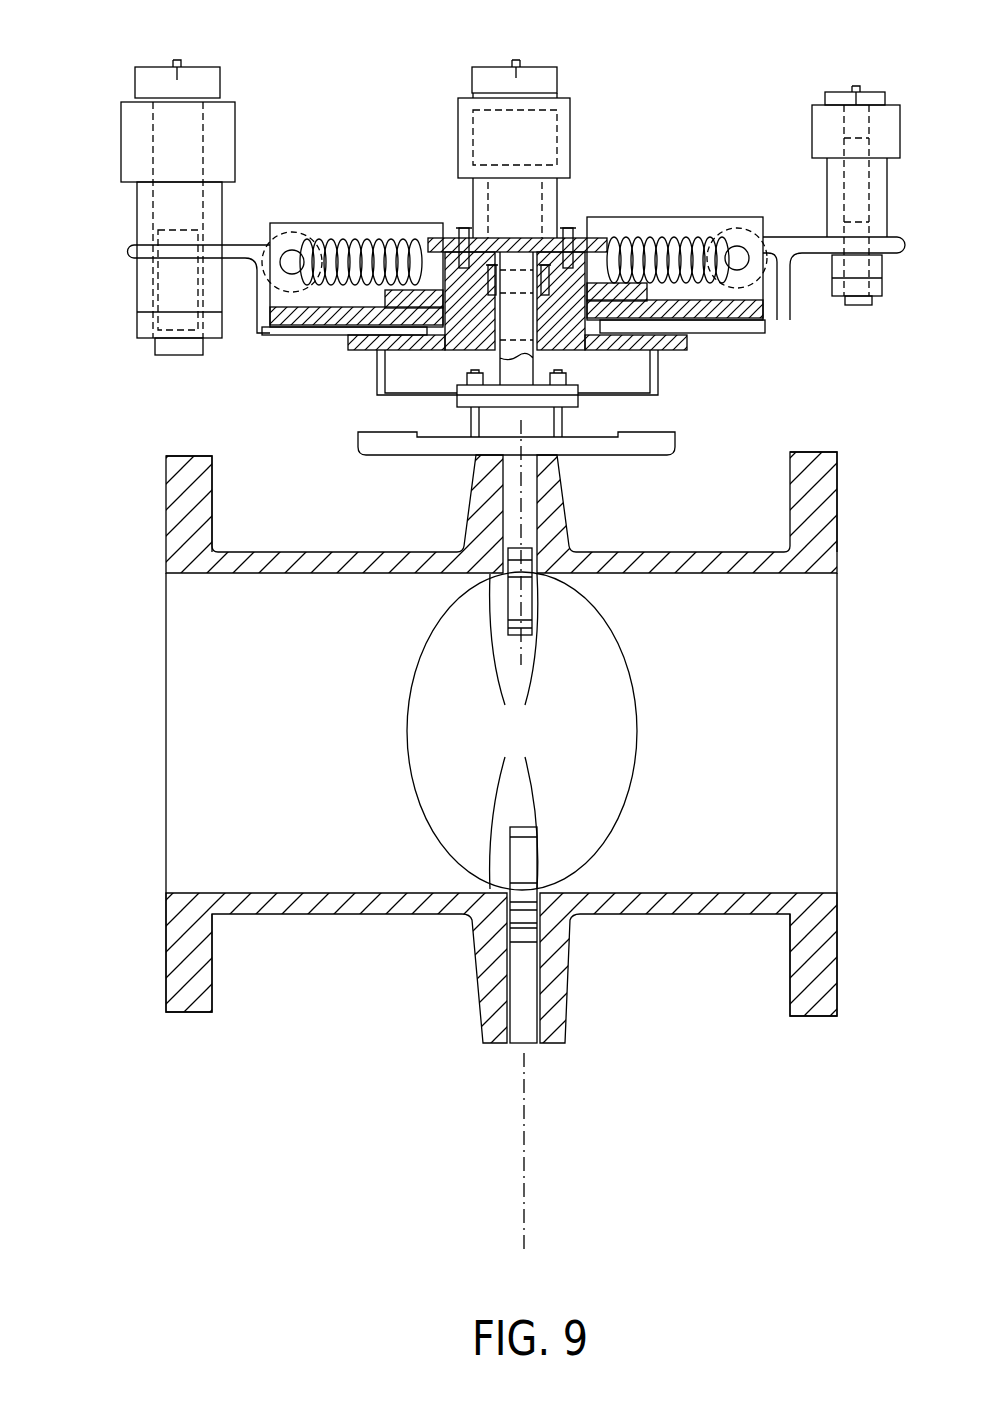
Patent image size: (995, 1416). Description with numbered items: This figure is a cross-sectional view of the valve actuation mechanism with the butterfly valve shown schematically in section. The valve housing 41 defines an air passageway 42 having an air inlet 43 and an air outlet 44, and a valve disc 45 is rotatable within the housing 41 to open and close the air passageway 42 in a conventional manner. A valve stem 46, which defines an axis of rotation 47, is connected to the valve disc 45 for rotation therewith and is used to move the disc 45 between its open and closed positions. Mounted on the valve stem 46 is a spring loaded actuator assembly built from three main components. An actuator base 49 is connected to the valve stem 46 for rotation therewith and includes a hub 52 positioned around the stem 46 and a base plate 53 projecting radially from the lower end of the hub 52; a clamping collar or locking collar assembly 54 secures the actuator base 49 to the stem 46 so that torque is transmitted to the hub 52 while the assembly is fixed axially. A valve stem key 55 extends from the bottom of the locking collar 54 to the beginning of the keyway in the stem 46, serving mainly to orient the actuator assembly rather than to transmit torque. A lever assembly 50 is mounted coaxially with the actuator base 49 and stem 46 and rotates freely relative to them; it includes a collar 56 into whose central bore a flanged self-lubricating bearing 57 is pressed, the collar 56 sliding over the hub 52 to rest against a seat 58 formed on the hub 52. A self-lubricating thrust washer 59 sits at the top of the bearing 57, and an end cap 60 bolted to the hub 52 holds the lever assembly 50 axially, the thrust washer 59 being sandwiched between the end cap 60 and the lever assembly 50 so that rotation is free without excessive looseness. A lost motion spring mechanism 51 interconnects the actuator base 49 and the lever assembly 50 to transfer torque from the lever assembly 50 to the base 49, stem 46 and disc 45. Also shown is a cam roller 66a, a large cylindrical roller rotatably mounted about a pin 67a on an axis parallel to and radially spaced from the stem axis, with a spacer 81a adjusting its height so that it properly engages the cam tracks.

The valve housing 41 is at (352, 914).
The air passageway 42 is at (310, 741).
The air inlet 43 is at (205, 893).
The air outlet 44 is at (784, 893).
The valve disc 45 is at (625, 700).
The valve stem 46 is at (505, 470).
The axis of rotation 47 is at (524, 1105).
The actuator base 49 is at (365, 355).
The lever assembly 50 is at (743, 318).
The lost motion spring mechanism 51 is at (668, 242).
The hub 52 is at (455, 335).
The base plate 53 is at (348, 338).
The locking collar assembly 54 is at (497, 263).
The valve stem key 55 is at (598, 340).
The collar 56 is at (623, 313).
The self-lubricating bearing 57 is at (607, 248).
The seat 58 is at (600, 340).
The thrust washer 59 is at (432, 240).
The end cap 60 is at (587, 237).
The cam roller 66a is at (120, 163).
The pin 67a is at (153, 67).
The spacer 81a is at (135, 215).